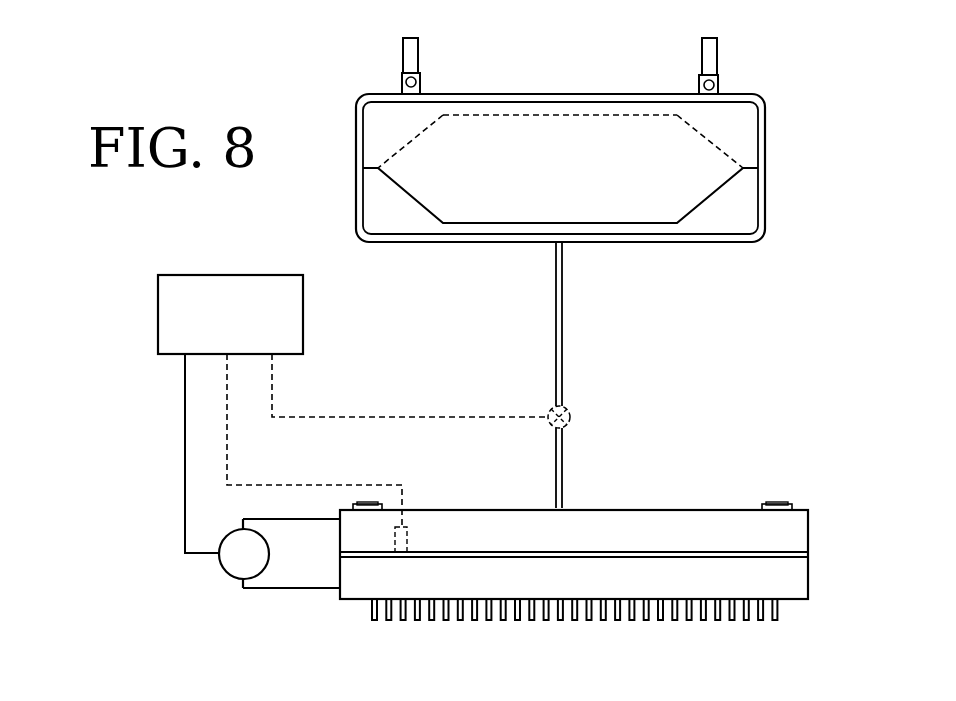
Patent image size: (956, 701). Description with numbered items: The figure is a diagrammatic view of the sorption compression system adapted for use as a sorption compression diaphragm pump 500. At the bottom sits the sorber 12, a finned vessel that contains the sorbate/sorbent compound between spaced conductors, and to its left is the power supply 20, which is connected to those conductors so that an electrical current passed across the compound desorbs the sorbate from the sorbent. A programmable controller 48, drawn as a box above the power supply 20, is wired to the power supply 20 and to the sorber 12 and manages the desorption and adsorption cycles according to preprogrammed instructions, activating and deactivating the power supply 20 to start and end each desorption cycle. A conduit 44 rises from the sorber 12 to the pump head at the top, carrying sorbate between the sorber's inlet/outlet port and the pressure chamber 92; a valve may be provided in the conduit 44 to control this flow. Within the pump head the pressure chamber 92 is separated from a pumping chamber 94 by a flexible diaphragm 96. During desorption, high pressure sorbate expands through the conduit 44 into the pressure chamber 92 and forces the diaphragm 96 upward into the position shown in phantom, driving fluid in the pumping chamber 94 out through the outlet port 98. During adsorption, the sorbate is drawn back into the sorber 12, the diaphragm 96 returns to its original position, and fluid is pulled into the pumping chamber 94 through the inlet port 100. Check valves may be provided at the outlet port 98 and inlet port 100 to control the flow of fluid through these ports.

The sorption compression diaphragm pump 500 is at (113, 553).
The sorber 12 is at (645, 507).
The power supply 20 is at (228, 572).
The conduit 44 is at (564, 360).
The programmable controller 48 is at (247, 330).
The pressure chamber 92 is at (736, 200).
The pumping chamber 94 is at (736, 130).
The flexible diaphragm 96 is at (537, 223).
The outlet port 98 is at (704, 98).
The inlet port 100 is at (417, 88).